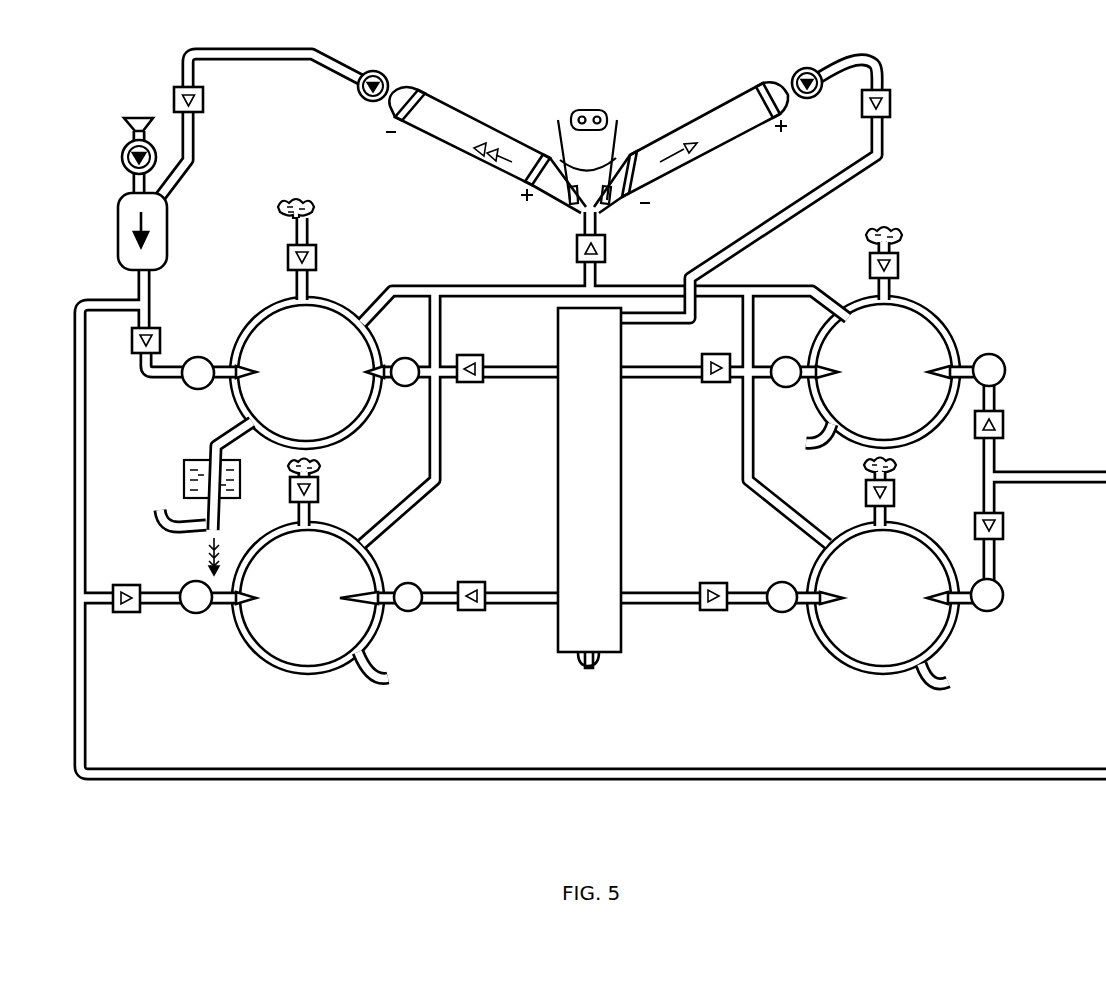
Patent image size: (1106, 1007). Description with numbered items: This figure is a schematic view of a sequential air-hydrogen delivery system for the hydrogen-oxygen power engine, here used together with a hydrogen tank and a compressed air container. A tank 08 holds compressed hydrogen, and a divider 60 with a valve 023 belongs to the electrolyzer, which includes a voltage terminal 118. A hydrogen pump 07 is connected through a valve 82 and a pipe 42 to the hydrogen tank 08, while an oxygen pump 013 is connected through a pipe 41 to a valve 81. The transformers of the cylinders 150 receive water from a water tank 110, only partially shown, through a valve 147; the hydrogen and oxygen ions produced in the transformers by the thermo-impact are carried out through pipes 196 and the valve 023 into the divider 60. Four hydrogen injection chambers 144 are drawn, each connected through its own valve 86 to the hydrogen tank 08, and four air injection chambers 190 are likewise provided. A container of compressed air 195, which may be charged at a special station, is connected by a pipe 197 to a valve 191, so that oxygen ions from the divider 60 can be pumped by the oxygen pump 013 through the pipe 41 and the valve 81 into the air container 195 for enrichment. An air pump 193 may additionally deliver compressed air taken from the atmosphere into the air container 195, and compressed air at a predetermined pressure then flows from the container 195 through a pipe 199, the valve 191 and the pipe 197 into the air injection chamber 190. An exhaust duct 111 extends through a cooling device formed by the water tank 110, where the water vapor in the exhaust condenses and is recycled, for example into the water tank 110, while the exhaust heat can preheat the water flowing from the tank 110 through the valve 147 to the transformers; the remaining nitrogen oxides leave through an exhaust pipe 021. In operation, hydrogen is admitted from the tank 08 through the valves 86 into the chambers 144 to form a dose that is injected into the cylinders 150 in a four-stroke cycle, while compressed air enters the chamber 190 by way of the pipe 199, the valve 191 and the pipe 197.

The oxygen pump 013 is at (380, 70).
The pipe 41 is at (288, 58).
The valve 81 is at (210, 103).
The air pump 193 is at (123, 156).
The container of compressed air 195 is at (118, 235).
The pipe 199 is at (152, 290).
The valve 191 is at (133, 351).
The pipe 197 is at (167, 386).
The air injection chamber 190 is at (201, 395).
The water tank 110 is at (313, 200).
The valve 147 is at (318, 256).
The pipes 196 is at (400, 289).
The voltage terminal 118 is at (592, 110).
The valve 023 is at (607, 246).
The hydrogen pump 07 is at (802, 66).
The valve 82 is at (892, 100).
The pipe 42 is at (884, 136).
The divider 60 is at (674, 176).
The valve 86 is at (468, 356).
The hydrogen injection chamber 144 is at (406, 390).
The cylinder 150 is at (338, 437).
The tank 08 is at (560, 444).
The exhaust duct 111 is at (220, 508).
The exhaust pipe 021 is at (169, 530).